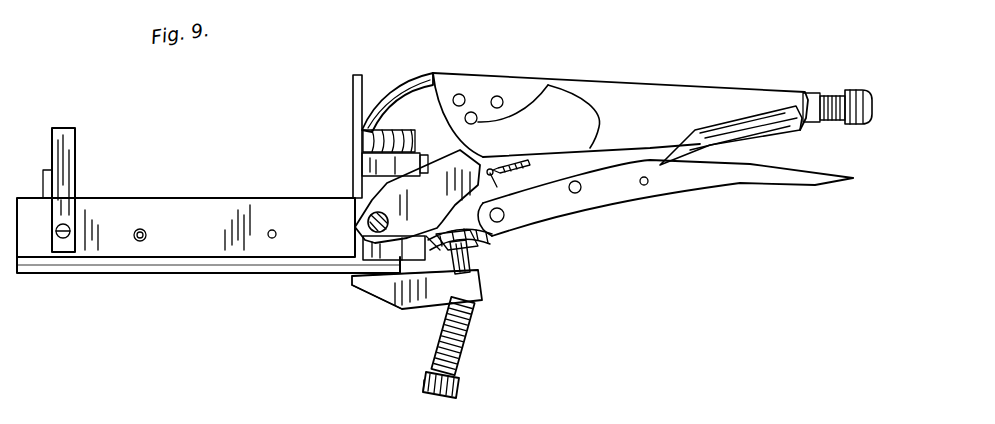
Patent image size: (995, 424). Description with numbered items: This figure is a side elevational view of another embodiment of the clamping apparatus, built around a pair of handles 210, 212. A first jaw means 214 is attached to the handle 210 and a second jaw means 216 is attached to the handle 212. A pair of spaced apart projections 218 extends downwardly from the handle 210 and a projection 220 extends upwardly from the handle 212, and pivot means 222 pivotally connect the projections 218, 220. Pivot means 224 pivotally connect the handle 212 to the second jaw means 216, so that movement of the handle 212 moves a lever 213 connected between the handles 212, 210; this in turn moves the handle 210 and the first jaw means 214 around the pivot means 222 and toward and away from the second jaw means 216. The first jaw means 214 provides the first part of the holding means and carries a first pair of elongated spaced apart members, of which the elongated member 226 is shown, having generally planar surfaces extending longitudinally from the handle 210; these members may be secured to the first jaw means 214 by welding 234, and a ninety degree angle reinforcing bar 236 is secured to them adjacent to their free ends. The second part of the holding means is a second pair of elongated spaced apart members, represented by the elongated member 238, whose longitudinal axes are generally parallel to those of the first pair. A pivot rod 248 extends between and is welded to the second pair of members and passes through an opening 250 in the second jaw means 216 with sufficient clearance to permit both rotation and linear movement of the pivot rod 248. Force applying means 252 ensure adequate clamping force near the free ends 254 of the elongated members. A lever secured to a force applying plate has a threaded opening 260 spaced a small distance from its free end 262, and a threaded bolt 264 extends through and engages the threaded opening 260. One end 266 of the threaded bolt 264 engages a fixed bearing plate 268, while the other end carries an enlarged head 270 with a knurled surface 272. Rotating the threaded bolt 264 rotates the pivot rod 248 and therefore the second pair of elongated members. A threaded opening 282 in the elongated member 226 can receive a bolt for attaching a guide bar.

The handle 210 is at (718, 92).
The handle 212 is at (692, 190).
The lever 213 is at (740, 149).
The first jaw means 214 is at (420, 82).
The second jaw means 216 is at (500, 238).
The projection 218 is at (480, 88).
The projection 220 is at (491, 167).
The pivot means 222 is at (548, 85).
The pivot means 224 is at (520, 222).
The elongated spaced apart member 226 is at (207, 230).
The welding 234 is at (362, 130).
The 90 degree angle reinforcing bar 236 is at (76, 150).
The elongated spaced apart member 238 is at (396, 300).
The pivot rod 248 is at (370, 234).
The opening 250 is at (365, 205).
The force applying means 252 is at (401, 363).
The free ends 254 is at (65, 292).
The threaded opening 260 is at (470, 290).
The free end 262 is at (480, 276).
The threaded bolt 264 is at (462, 352).
The end of threaded bolt 266 is at (478, 258).
The fixed bearing plate 268 is at (412, 293).
The enlarged head 270 is at (455, 390).
The knurled surface 272 is at (434, 386).
The threaded opening 282 is at (271, 229).